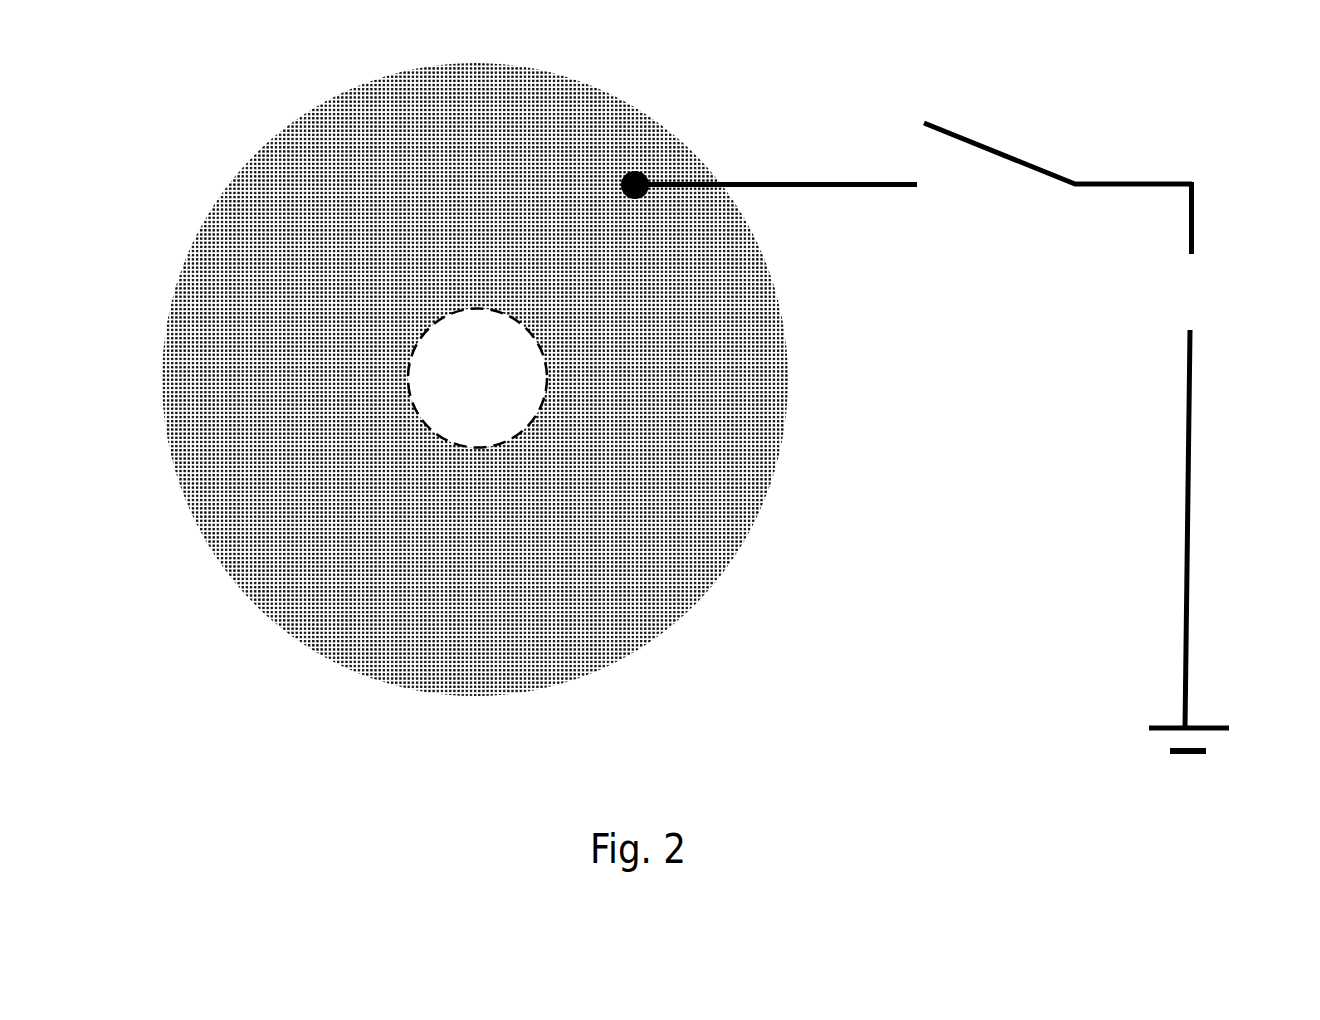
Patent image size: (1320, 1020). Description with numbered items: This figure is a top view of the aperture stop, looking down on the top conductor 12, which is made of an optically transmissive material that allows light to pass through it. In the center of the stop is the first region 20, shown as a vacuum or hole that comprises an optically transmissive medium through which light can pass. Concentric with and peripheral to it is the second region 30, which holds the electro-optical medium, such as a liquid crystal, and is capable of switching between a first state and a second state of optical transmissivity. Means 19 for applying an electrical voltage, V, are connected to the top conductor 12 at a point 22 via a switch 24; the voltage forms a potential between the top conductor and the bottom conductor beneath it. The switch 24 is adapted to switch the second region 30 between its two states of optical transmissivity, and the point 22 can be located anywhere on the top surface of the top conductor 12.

The top conductor 12 is at (443, 379).
The second region 30 is at (371, 589).
The first region 20 is at (488, 391).
The point 22 is at (633, 182).
The switch 24 is at (997, 151).
The means for applying electrical voltage 19 is at (1211, 163).